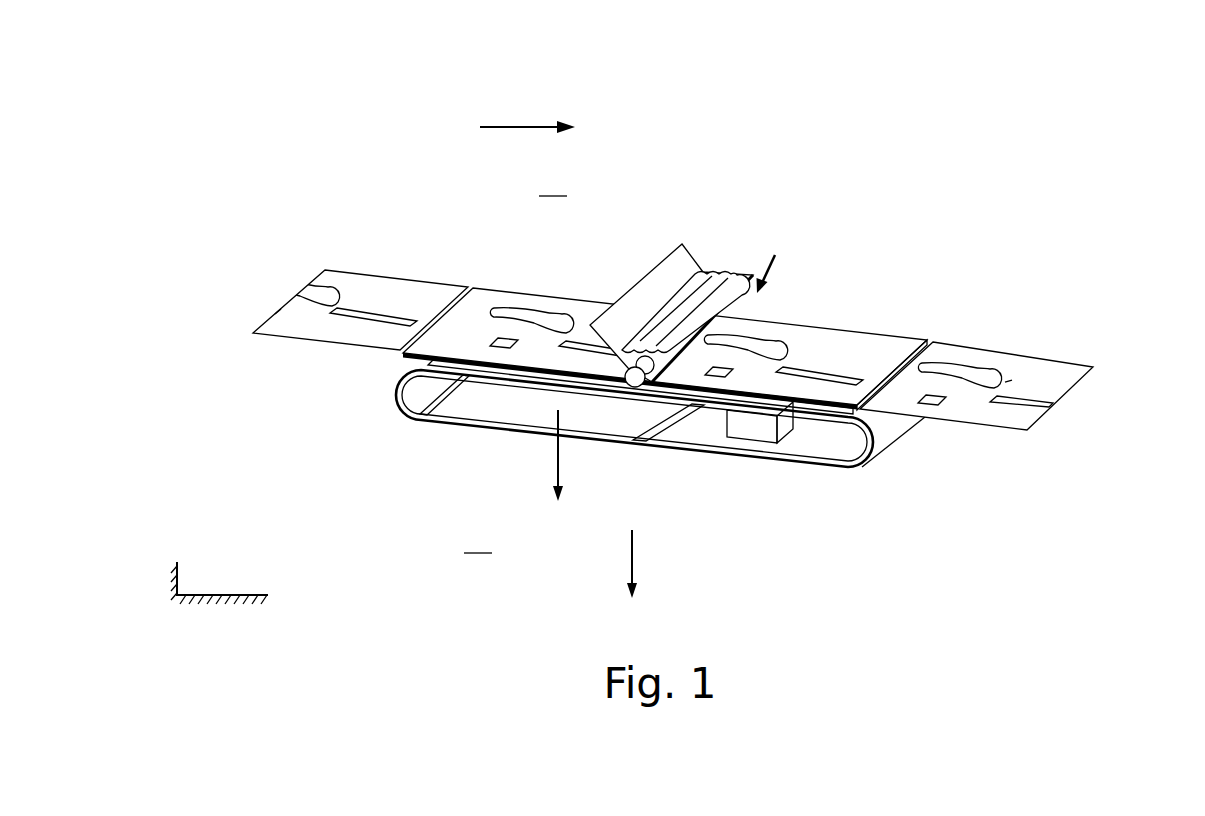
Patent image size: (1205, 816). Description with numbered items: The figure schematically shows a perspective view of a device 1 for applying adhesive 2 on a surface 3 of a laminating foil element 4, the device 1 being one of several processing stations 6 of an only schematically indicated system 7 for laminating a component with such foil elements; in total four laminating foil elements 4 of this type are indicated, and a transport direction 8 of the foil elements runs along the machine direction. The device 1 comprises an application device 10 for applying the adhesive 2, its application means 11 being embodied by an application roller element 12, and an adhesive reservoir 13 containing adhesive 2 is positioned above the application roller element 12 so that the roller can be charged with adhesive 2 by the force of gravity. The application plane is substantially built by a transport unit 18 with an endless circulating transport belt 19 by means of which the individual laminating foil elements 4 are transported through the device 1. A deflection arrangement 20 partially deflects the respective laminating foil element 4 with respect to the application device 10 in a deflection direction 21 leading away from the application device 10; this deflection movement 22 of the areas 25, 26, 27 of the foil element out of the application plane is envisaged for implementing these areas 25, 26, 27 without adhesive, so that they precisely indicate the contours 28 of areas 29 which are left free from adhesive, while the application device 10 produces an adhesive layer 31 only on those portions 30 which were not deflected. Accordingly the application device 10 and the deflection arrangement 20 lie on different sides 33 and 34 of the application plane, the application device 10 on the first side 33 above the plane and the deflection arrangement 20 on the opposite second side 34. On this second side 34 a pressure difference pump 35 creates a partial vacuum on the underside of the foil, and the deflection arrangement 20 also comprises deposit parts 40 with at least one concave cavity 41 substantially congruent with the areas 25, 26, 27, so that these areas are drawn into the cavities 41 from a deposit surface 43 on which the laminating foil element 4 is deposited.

The device 1 is at (1030, 195).
The adhesive 2 is at (686, 285).
The surface 3 is at (360, 266).
The laminating foil element 4 is at (665, 303).
The processing station 6 is at (712, 281).
The system / machine direction 7 is at (256, 593).
The conveying direction 8 is at (515, 127).
The application device 10 is at (712, 329).
The application means 11 is at (770, 285).
The application roller element 12 is at (636, 380).
The adhesive reservoir 13 is at (726, 265).
The transport unit 18 is at (1005, 397).
The transport belt 19 is at (666, 459).
The deflection arrangement 20 is at (640, 478).
The deflection direction 21 is at (634, 560).
The deflection movement 22 is at (557, 462).
The area 25 is at (992, 376).
The area 26 is at (1052, 404).
The area 27 is at (941, 403).
The contour 28 is at (1012, 380).
The area left free from adhesive 29 is at (986, 327).
The portion 30 is at (665, 303).
The adhesive layer 31 is at (1005, 397).
The first side 33 is at (552, 184).
The second side 34 is at (477, 541).
The pressure difference pump 35 is at (752, 432).
The deposit part 40 is at (815, 410).
The concave cavity 41 is at (537, 300).
The deposit surface 43 is at (401, 292).